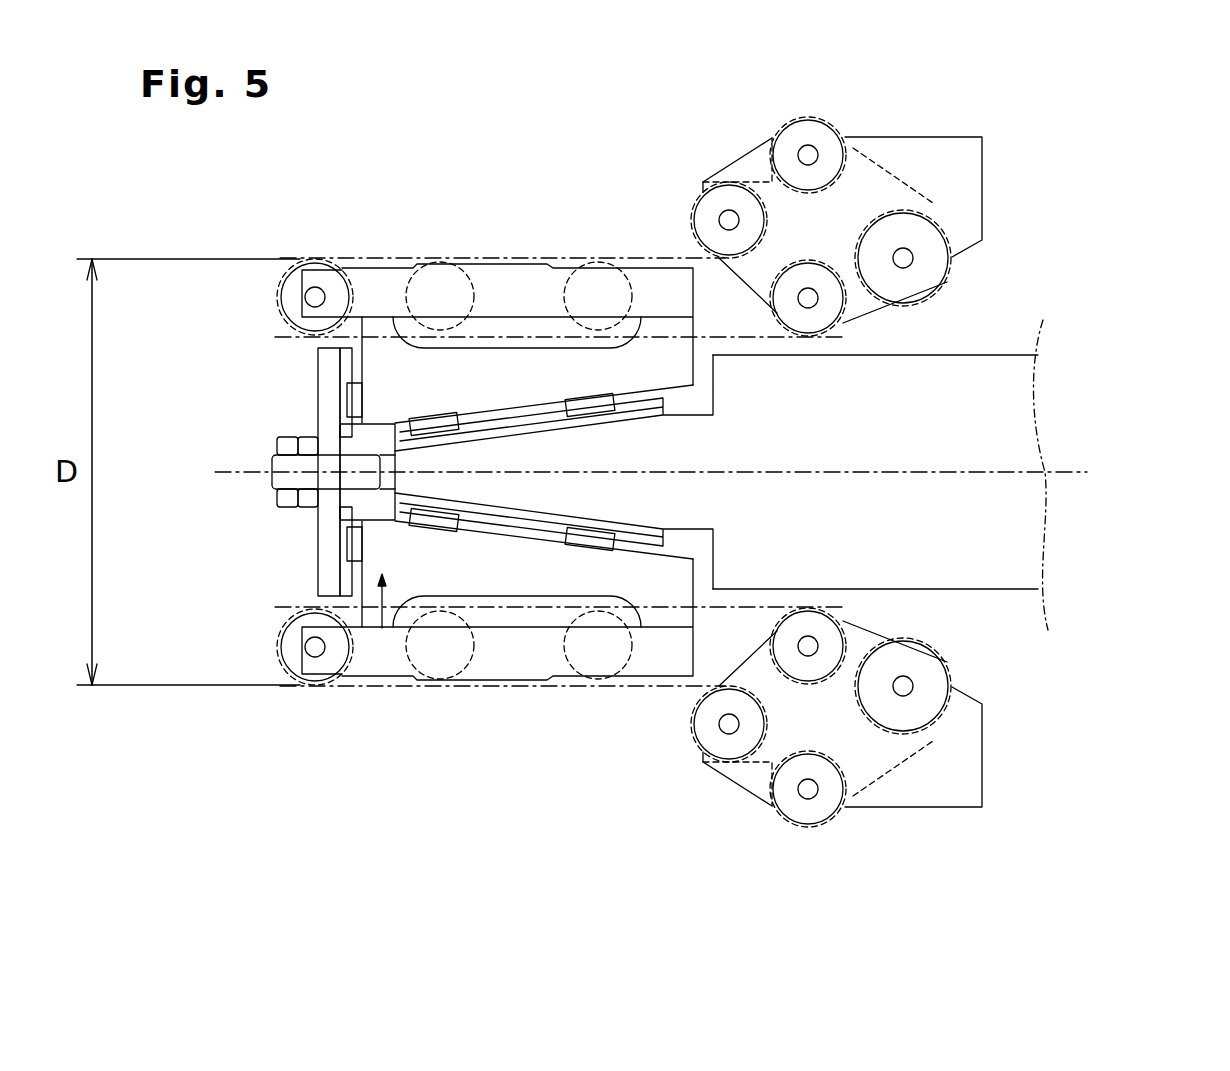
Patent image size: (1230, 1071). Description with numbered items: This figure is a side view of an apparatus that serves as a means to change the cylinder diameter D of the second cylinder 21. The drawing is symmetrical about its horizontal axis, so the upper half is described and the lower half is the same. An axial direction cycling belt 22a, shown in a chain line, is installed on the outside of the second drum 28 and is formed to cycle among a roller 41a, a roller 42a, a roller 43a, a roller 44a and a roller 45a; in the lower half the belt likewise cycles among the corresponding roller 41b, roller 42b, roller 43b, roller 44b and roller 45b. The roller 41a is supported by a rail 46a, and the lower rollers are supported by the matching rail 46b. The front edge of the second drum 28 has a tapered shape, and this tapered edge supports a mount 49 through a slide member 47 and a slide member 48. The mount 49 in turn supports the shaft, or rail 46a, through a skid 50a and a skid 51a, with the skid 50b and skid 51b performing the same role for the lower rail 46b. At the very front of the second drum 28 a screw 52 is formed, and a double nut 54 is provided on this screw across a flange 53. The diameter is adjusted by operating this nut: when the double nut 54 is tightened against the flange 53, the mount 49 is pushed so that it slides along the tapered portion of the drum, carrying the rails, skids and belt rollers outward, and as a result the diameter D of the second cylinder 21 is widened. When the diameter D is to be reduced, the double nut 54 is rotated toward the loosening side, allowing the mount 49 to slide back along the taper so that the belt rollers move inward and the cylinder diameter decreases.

The second cylinder 21 is at (350, 688).
The axial direction cycling belt 22a is at (541, 263).
The second drum 28 is at (1003, 400).
The roller 41a is at (948, 275).
The roller 41b is at (945, 678).
The roller 42a is at (822, 258).
The roller 42b is at (833, 824).
The roller 43a is at (808, 120).
The roller 43b is at (823, 684).
The roller 44a is at (705, 182).
The roller 44b is at (690, 740).
The roller 45a is at (287, 282).
The roller 45b is at (275, 641).
The rail 46a is at (375, 268).
The rail 46b is at (513, 681).
The slide member 47 is at (440, 530).
The slide member 48 is at (585, 548).
The mount 49 is at (326, 366).
The skid 50a is at (637, 268).
The skid 50b is at (627, 676).
The skid 51a is at (472, 262).
The skid 51b is at (406, 652).
The screw 52 is at (276, 445).
The flange 53 is at (344, 400).
The double nut 54 is at (270, 490).